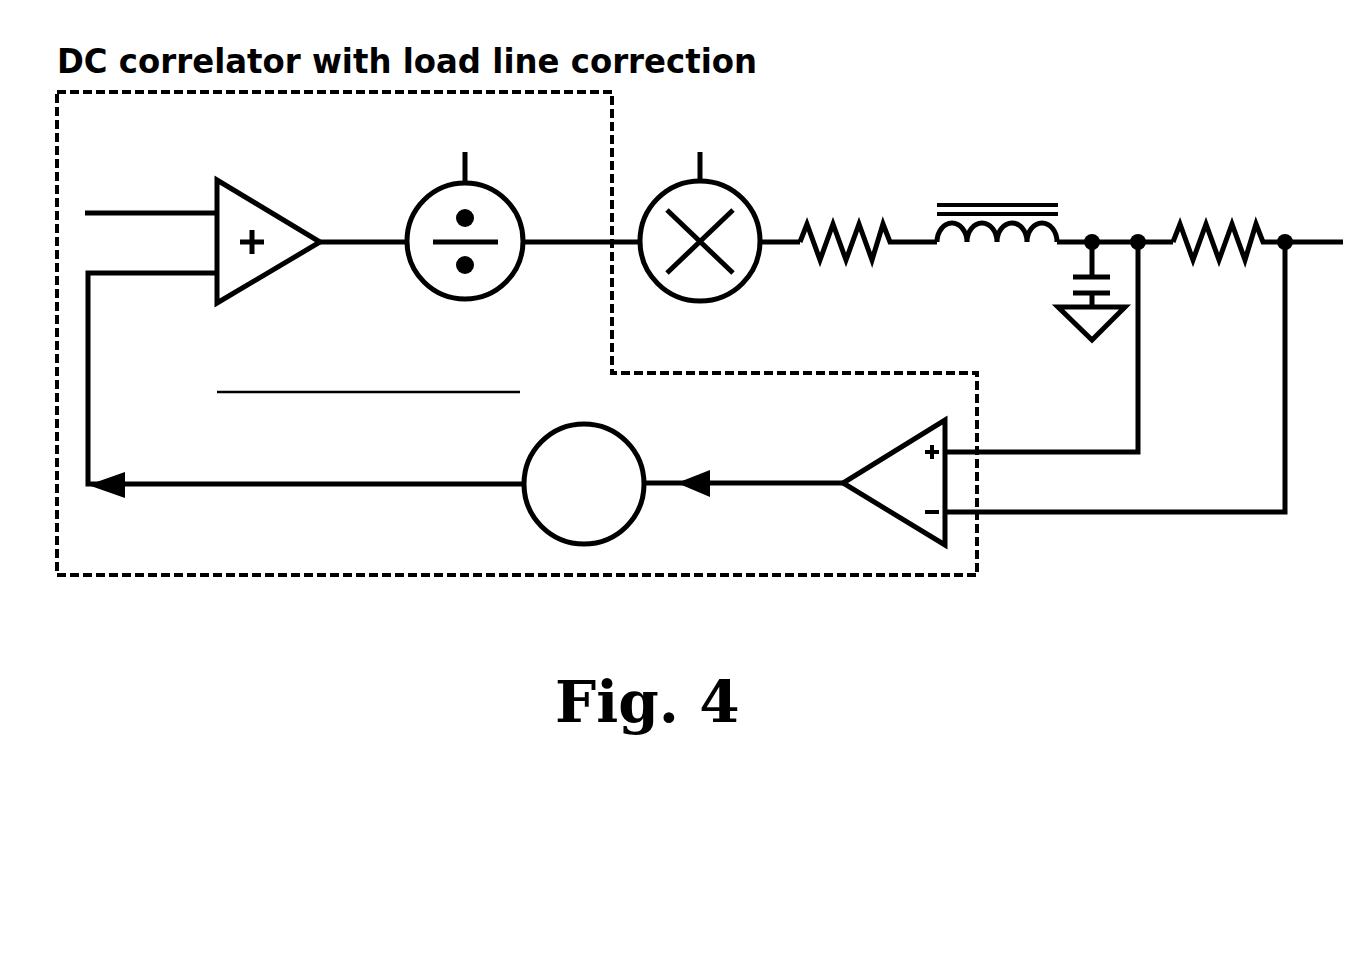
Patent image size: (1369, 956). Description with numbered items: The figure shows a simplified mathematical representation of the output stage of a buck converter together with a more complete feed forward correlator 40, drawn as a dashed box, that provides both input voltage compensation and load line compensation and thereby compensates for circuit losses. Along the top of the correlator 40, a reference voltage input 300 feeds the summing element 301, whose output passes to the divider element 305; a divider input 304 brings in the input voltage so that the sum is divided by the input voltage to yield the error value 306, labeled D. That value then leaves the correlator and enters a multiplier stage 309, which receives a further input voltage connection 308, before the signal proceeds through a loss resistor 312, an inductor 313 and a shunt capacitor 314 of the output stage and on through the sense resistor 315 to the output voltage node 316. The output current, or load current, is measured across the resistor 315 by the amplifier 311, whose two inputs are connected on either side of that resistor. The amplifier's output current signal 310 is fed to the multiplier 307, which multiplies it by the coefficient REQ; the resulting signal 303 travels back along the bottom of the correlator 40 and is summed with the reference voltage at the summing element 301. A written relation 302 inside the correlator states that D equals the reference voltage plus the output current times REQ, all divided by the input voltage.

The feed forward correlator 40 is at (200, 595).
The reference voltage VREF input 300 is at (151, 171).
The summing element 301 is at (312, 242).
The duty cycle equation D 302 is at (335, 396).
The resulting signal 303 is at (306, 416).
The input voltage VIN to divider 304 is at (425, 141).
The divider element 305 is at (495, 243).
The error value 306 is at (581, 208).
The multiplier 307 is at (605, 491).
The input voltage VIN to multiplier 308 is at (714, 140).
The multiplier 309 is at (722, 250).
The output current IO 310 is at (743, 514).
The amplifier 311 is at (990, 393).
The loss resistor RLOSS 312 is at (866, 230).
The output inductor 313 is at (1055, 210).
The output capacitor 314 is at (1063, 291).
The resistor 315 is at (1254, 254).
The output voltage VOUT node 316 is at (1157, 351).